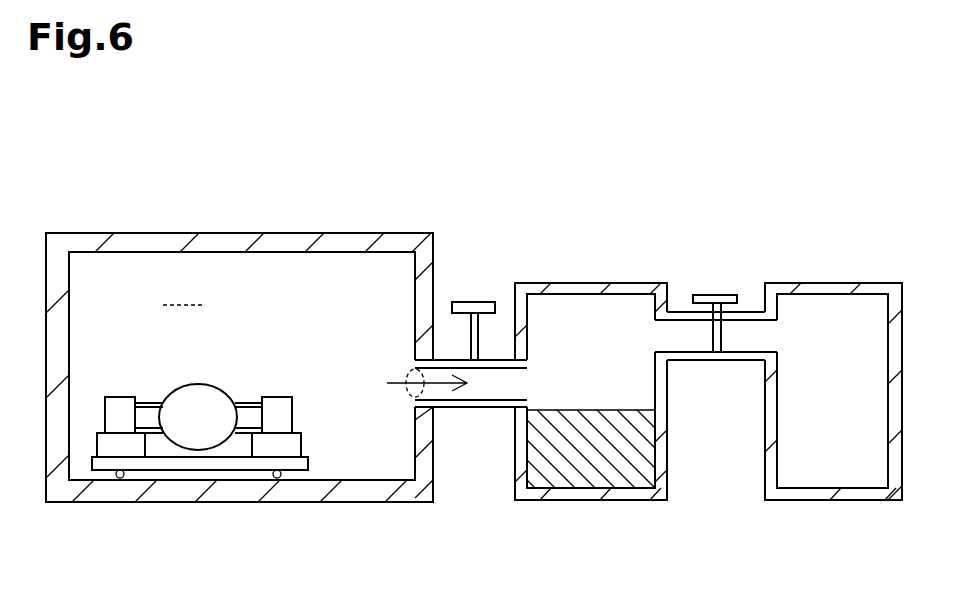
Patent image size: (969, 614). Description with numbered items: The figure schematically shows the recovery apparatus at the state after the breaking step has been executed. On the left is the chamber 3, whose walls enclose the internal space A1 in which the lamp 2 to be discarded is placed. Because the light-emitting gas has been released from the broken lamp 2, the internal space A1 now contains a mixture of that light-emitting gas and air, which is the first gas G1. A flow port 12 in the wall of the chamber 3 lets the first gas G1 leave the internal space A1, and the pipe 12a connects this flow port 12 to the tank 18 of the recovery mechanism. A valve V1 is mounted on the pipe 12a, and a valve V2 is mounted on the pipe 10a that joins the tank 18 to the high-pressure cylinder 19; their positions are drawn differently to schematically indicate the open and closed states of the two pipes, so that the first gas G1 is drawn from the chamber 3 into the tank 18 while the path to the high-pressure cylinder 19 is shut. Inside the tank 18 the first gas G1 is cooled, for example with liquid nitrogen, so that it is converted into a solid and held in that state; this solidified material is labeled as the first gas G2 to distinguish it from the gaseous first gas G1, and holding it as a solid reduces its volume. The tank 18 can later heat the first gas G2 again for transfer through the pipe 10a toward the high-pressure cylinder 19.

The lamp 2 is at (147, 366).
The chamber 3 is at (283, 233).
The flow port 12 is at (410, 392).
The pipe 12a is at (468, 407).
The tank 18 is at (593, 283).
The high-pressure cylinder 19 is at (842, 283).
The pipe 10a is at (687, 360).
The internal space A1 is at (184, 287).
The first gas G1 is at (401, 384).
The first gas in a solid state G2 is at (591, 449).
The valve V1 is at (473, 314).
The valve V2 is at (715, 307).